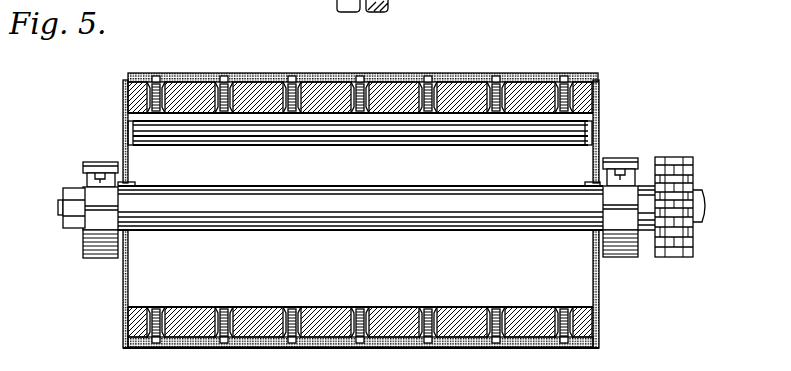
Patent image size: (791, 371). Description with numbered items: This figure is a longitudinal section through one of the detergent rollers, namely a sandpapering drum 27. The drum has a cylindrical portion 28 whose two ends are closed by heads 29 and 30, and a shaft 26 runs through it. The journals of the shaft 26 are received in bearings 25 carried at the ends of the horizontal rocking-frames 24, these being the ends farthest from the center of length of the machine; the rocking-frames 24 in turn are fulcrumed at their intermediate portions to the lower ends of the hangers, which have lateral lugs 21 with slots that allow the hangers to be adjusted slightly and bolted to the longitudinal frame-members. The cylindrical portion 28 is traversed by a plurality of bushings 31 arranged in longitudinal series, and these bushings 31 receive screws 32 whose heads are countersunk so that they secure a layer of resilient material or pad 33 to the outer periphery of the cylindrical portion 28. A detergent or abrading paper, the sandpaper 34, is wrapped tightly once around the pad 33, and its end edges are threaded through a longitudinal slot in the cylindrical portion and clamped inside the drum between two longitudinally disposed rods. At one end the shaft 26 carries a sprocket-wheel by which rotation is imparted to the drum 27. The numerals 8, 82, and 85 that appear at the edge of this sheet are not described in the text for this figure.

The sandpapering drum 27 is at (527, 72).
The sandpaper 34 is at (313, 75).
The pad 33 is at (187, 74).
The head 30 is at (122, 100).
The head 29 is at (600, 112).
The screw 32 is at (362, 114).
The lateral lug 21 is at (373, 95).
The cylindrical portion 28 is at (402, 318).
The bushing 31 is at (280, 98).
The shaft 26 is at (480, 213).
The bearing 25 is at (93, 166).
The rocking-frame 24 is at (100, 258).
The section line of adjacent figure 8 is at (362, 30).
The part of adjacent figure 82 is at (444, 0).
The part of adjacent figure 85 is at (549, 0).